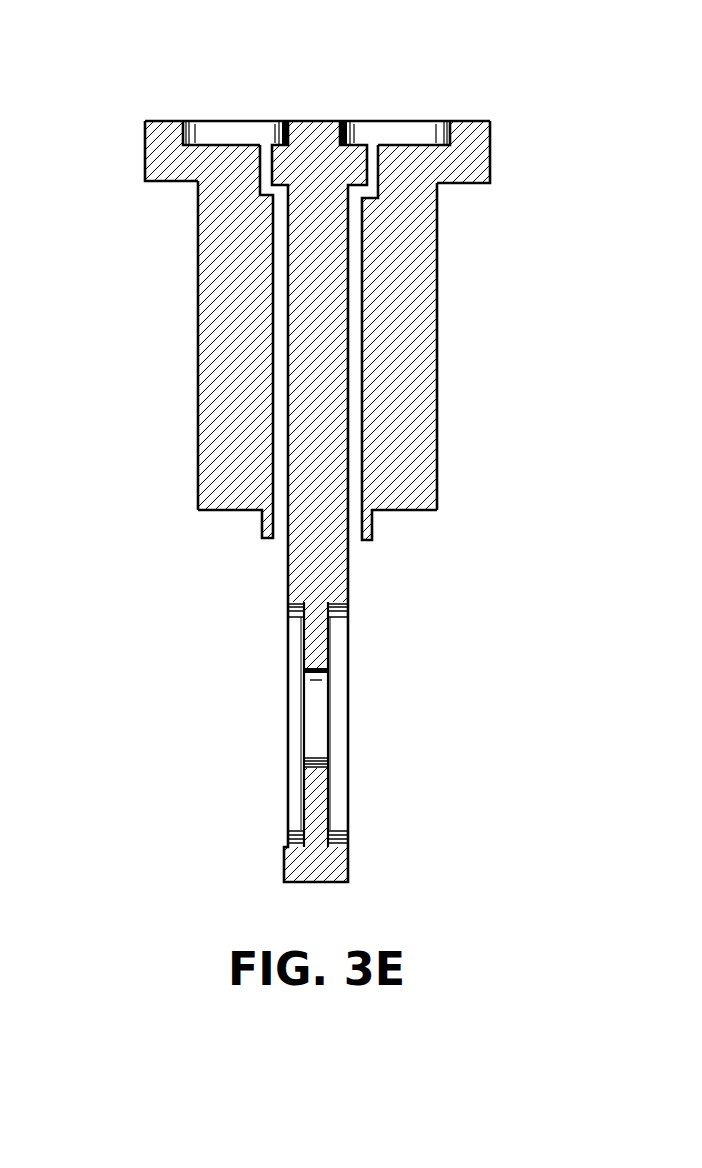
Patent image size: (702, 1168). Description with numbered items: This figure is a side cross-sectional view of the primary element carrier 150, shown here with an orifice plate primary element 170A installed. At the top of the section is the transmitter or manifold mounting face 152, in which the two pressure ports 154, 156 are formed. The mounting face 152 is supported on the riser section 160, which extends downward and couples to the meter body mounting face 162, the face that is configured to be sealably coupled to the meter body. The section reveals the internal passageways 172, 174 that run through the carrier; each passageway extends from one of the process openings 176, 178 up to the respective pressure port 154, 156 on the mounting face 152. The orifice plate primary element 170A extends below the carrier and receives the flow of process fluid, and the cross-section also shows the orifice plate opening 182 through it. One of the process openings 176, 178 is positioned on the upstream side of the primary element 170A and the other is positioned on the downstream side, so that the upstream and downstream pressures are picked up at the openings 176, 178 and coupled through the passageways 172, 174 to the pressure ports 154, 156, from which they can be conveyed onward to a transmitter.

The primary element carrier 150 is at (104, 85).
The transmitter or manifold mounting face 152 is at (473, 122).
The pressure port 154 is at (240, 128).
The pressure port 156 is at (403, 135).
The riser section 160 is at (413, 352).
The meter body mounting face 162 is at (412, 475).
The orifice plate primary element 170A is at (328, 782).
The internal passageway 172 is at (285, 327).
The internal passageway 174 is at (357, 327).
The process opening 176 is at (280, 545).
The process opening 178 is at (353, 545).
The orifice plate opening 182 is at (318, 702).